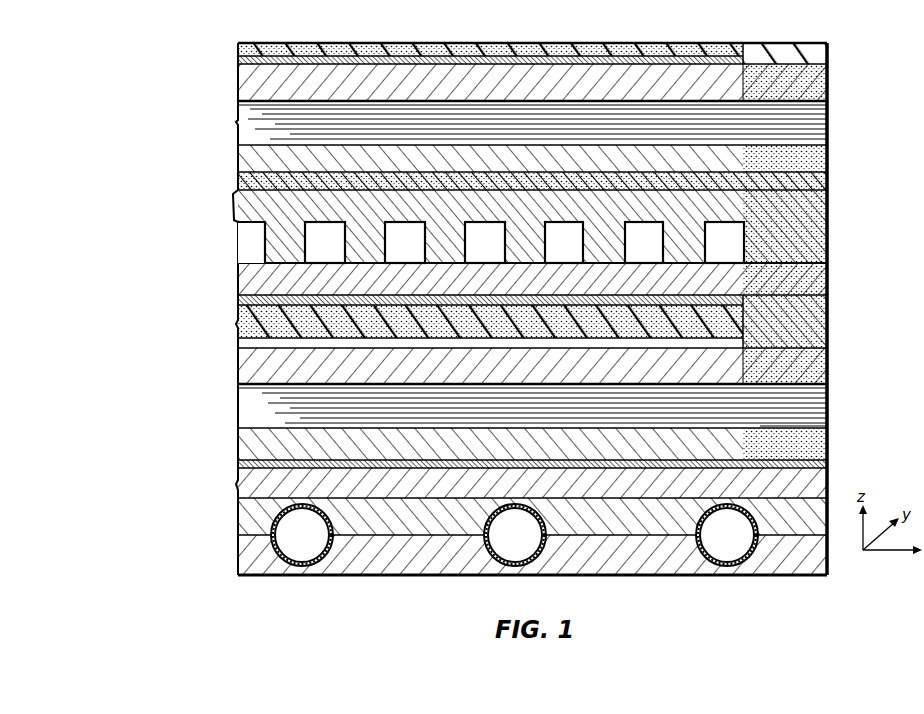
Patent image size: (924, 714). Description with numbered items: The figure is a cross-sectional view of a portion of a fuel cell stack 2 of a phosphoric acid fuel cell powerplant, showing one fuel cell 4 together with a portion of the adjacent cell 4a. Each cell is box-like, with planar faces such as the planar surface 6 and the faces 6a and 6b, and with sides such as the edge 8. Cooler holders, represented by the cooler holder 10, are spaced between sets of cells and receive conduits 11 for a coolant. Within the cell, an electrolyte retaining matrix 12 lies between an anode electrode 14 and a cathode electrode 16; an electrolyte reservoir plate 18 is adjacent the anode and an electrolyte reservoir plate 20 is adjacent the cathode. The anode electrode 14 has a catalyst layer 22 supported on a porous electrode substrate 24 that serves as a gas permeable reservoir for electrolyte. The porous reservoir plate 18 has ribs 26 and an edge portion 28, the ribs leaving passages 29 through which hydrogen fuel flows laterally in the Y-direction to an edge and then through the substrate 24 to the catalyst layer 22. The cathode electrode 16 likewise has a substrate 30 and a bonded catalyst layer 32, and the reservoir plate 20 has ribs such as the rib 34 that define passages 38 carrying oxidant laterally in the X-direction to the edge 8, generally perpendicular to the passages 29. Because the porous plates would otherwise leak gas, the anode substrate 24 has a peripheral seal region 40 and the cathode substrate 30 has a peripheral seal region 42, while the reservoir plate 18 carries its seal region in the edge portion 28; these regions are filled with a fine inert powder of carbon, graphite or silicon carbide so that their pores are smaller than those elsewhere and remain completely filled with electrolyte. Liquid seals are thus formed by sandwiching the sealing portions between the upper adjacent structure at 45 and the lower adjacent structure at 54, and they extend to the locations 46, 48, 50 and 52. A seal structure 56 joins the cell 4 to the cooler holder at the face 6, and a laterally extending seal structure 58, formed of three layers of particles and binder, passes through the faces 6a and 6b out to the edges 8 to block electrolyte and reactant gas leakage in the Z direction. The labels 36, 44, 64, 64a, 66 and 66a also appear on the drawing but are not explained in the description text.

The fuel cell stack 2 is at (118, 344).
The fuel cell 4 is at (226, 470).
The adjacent cell 4a is at (158, 185).
The planar surface 6 is at (238, 170).
The face 6a is at (287, 190).
The face 6b is at (238, 193).
The edge 8 is at (828, 150).
The cooler holder 10 is at (236, 500).
The conduits 11 is at (290, 548).
The electrolyte retaining matrix 12 is at (424, 46).
The anode electrode 14 is at (228, 265).
The cathode electrode 16 is at (228, 60).
The electrolyte reservoir plate 18 is at (238, 209).
The electrolyte reservoir plate 20 is at (238, 152).
The catalyst layer 22 is at (240, 265).
The electrode substrate 24 is at (720, 170).
The ribs 26 is at (573, 236).
The edge portion 28 is at (777, 236).
The passages 29 is at (332, 222).
The substrate 30 is at (678, 46).
The catalyst layer 32 is at (262, 62).
The rib 34 is at (238, 126).
The line in sheet layer 36 is at (806, 428).
The passages 38 is at (238, 103).
The peripheral seal region 40 is at (828, 275).
The peripheral seal region 42 is at (828, 365).
The edge region boundary 44 is at (828, 320).
The liquid seal location 45 is at (834, 190).
The liquid seal location 46 is at (828, 270).
The liquid seal location 48 is at (828, 283).
The liquid seal location 50 is at (828, 355).
The liquid seal location 52 is at (828, 370).
The liquid seal location 54 is at (836, 433).
The seal structure 56 is at (838, 456).
The seal structure 58 is at (838, 172).
The element 64 is at (485, 242).
The element lead 64a is at (488, 172).
The element 66 is at (405, 242).
The element lead 66a is at (437, 172).